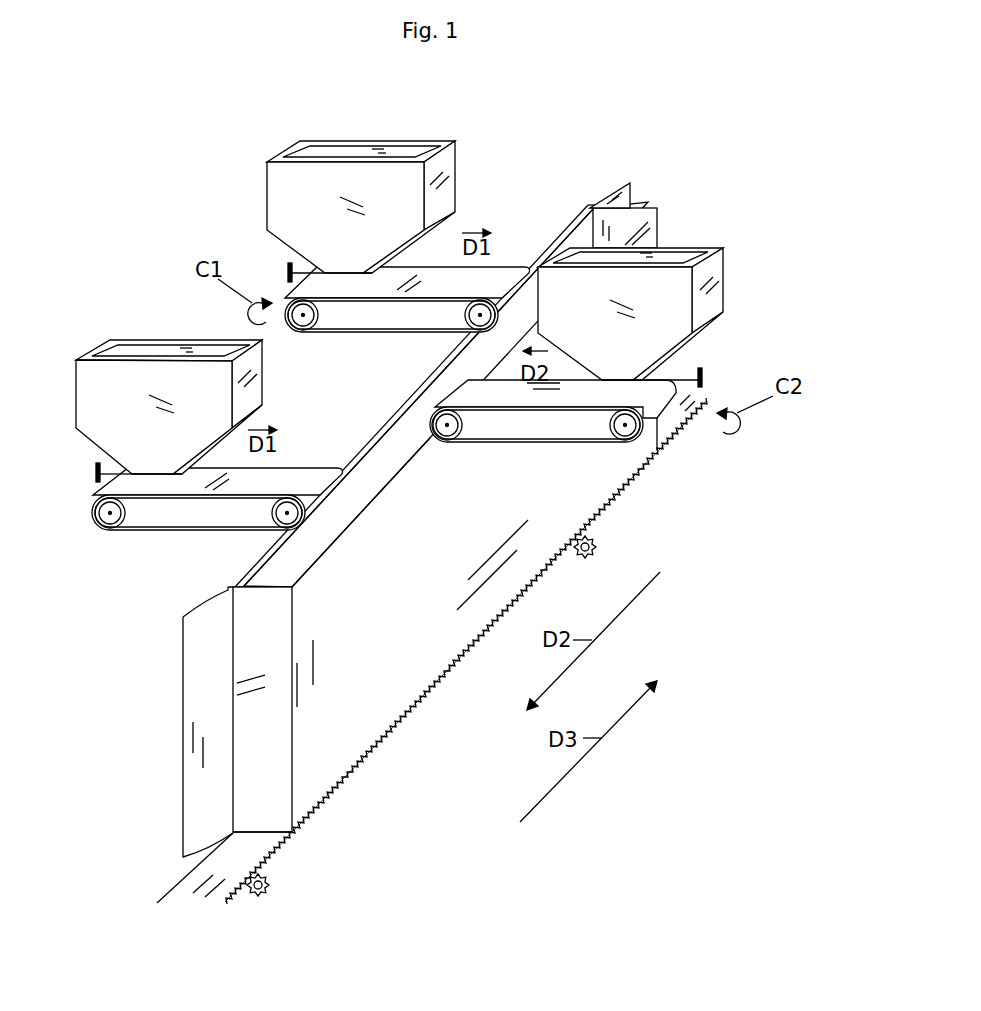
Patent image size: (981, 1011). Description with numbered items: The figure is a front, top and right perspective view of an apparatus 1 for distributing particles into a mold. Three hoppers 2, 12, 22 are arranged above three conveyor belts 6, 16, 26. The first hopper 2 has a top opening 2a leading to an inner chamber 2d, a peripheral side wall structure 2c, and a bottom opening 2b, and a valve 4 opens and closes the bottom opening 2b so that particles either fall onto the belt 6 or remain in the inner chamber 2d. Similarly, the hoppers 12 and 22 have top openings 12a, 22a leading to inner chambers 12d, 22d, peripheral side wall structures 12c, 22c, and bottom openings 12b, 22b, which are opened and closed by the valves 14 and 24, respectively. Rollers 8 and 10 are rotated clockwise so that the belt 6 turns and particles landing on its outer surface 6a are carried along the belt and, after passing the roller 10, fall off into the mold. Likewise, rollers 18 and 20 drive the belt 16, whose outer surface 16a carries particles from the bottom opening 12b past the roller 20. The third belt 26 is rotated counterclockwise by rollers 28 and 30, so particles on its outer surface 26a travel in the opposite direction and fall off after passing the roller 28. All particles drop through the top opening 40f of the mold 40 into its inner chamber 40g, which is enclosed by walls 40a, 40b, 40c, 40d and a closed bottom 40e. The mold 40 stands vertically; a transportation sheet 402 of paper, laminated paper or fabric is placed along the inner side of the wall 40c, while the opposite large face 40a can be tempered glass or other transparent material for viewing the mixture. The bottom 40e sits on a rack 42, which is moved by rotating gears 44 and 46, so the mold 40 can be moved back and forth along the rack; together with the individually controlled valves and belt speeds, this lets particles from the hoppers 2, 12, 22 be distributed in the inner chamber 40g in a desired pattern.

The apparatus 1 is at (568, 159).
The hopper 2 is at (369, 180).
The top opening 2a is at (395, 149).
The bottom opening 2b is at (350, 273).
The peripheral side wall structure 2c is at (288, 204).
The inner chamber 2d is at (322, 152).
The valve 4 is at (287, 272).
The conveyor belt 6 is at (407, 305).
The outer surface 6a is at (445, 280).
The roller 8 is at (304, 318).
The roller 10 is at (463, 324).
The hopper 12 is at (137, 367).
The top opening 12a is at (123, 352).
The bottom opening 12b is at (157, 472).
The peripheral side wall structure 12c is at (95, 407).
The inner chamber 12d is at (140, 352).
The valve 14 is at (93, 468).
The conveyor belt 16 is at (204, 486).
The outer surface 16a is at (315, 472).
The roller 18 is at (108, 521).
The roller 20 is at (286, 518).
The hopper 22 is at (673, 271).
The top opening 22a is at (677, 255).
The bottom opening 22b is at (618, 380).
The peripheral side wall structure 22c is at (677, 316).
The inner chamber 22d is at (630, 258).
The valve 24 is at (705, 371).
The conveyor belt 26 is at (552, 448).
The outer surface 26a is at (520, 395).
The roller 28 is at (452, 431).
The roller 30 is at (585, 395).
The mold 40 is at (416, 519).
The wall 40a is at (425, 632).
The wall 40b is at (268, 752).
The wall 40c is at (233, 574).
The wall 40d is at (640, 232).
The closed bottom 40e is at (258, 833).
The top opening 40f is at (367, 476).
The inner chamber 40g is at (343, 505).
The rack 42 is at (208, 897).
The gear 44 is at (269, 888).
The gear 46 is at (597, 547).
The transportation sheet 402 is at (630, 183).